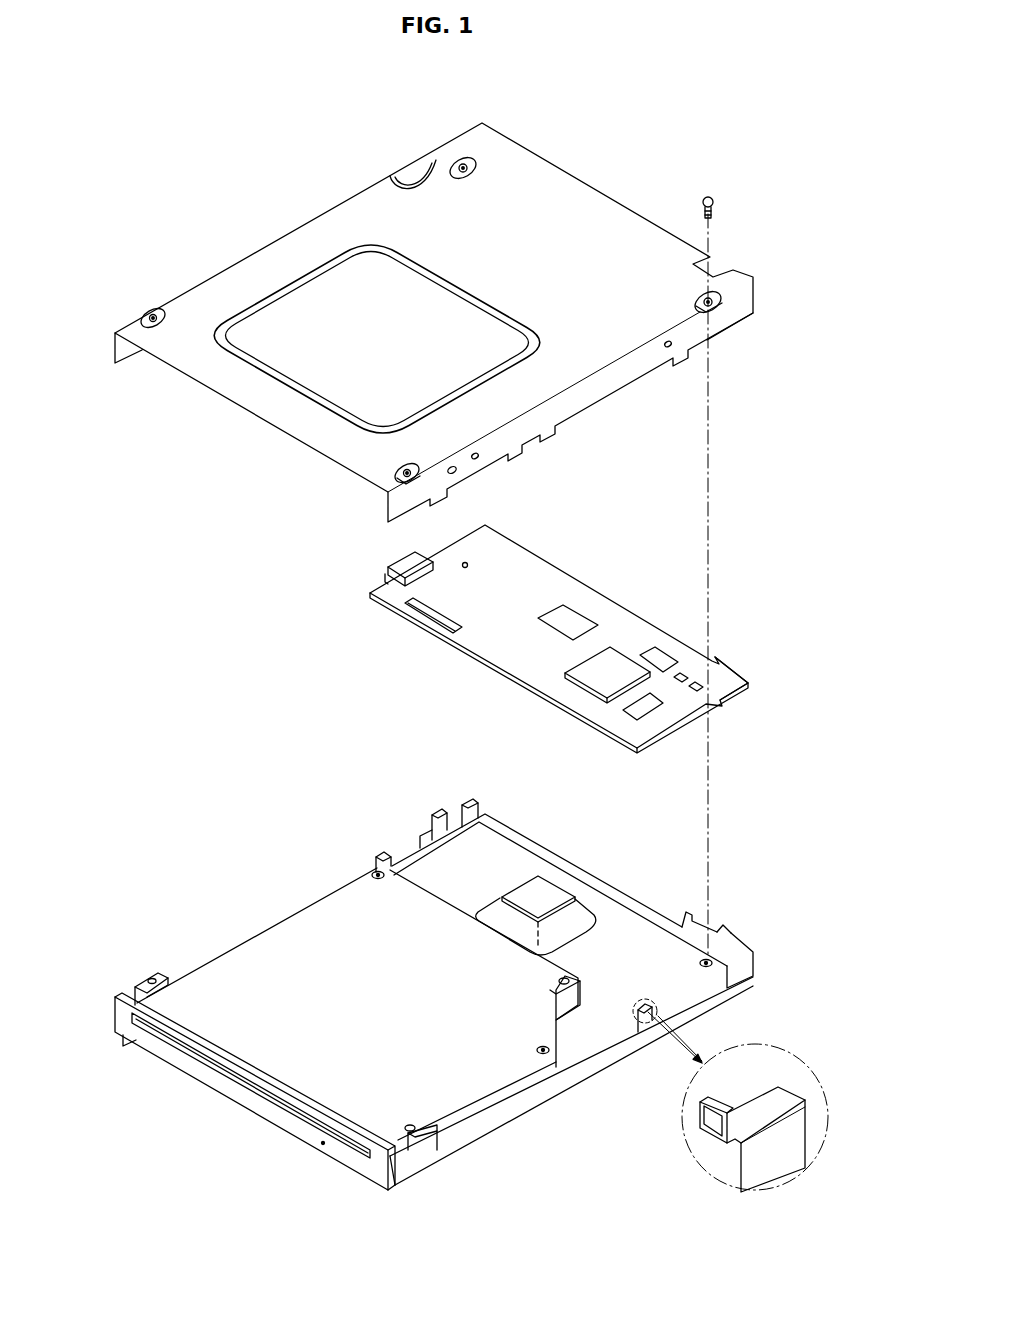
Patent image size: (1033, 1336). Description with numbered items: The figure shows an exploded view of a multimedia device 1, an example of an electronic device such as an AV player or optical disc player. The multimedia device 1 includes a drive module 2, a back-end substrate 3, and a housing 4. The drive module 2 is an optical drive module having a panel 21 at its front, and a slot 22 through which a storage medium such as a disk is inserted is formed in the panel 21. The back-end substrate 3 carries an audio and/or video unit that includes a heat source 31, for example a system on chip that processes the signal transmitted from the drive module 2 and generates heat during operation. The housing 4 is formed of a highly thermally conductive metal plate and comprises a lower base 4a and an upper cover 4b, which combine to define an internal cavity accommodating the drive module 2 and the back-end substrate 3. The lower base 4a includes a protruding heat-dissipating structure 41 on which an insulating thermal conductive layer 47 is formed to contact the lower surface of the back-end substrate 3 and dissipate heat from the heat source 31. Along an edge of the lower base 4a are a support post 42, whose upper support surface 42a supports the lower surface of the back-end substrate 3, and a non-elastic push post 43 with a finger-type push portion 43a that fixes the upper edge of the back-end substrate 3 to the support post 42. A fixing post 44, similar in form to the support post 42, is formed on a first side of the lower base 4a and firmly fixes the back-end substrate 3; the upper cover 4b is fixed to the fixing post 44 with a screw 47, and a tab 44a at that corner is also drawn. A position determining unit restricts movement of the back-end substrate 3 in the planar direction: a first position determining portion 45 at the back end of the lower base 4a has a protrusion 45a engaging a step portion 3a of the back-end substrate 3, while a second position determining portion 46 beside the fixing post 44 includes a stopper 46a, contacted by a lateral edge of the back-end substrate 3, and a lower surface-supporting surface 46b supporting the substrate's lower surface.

The multimedia device 1 is at (702, 123).
The drive module 2 is at (268, 942).
The panel 21 is at (118, 1003).
The slot 22 is at (248, 1085).
The back-end substrate 3 is at (565, 577).
The heat source 31 is at (622, 657).
The step portion 3a is at (742, 670).
The housing 4 is at (477, 677).
The lower base 4a is at (582, 1057).
The upper cover 4b is at (607, 200).
The heat-dissipating structure 41 is at (580, 907).
The support post 42 is at (367, 850).
The upper support surface 42a is at (383, 853).
The non-elastic push post 43 is at (425, 807).
The finger-type push portion 43a is at (440, 812).
The fixing post 44 is at (727, 973).
The screw hole tab 44a is at (700, 970).
The first position determining portion 45 is at (743, 927).
The protrusion 45a is at (723, 928).
The second position determining portion 46 is at (780, 1165).
The stopper 46a is at (717, 1113).
The lower surface-supporting surface 46b is at (762, 1113).
The screw 47 is at (545, 888).